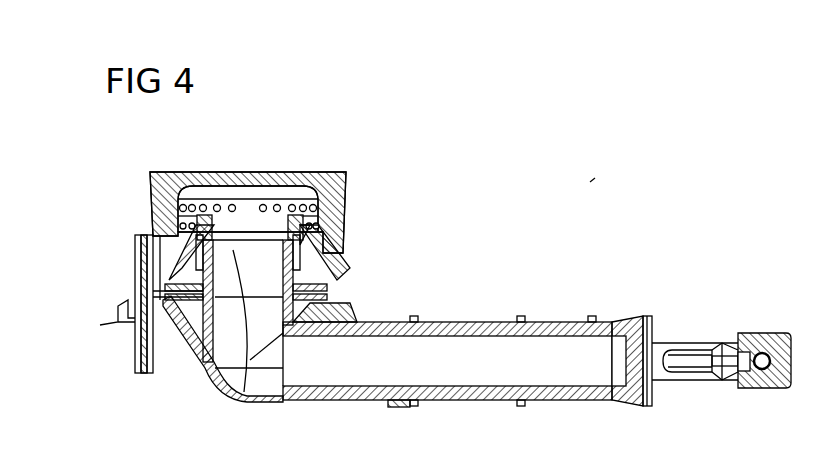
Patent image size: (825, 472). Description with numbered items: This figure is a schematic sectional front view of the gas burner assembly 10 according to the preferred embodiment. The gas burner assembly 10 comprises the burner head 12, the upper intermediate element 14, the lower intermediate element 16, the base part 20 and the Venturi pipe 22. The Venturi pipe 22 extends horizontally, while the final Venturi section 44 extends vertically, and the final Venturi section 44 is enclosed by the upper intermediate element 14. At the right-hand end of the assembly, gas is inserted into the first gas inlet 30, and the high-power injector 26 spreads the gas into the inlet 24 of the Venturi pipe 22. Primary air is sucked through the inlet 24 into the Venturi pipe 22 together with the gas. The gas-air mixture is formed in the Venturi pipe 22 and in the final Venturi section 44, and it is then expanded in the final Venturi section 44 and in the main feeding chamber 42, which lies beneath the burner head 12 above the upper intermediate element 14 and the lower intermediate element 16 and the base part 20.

The gas burner assembly 10 is at (593, 180).
The burner head 12 is at (300, 173).
The upper intermediate element 14 is at (355, 242).
The lower intermediate element 16 is at (355, 275).
The base part 20 is at (192, 362).
The Venturi pipe 22 is at (464, 322).
The inlet 24 is at (654, 392).
The high-power injector 26 is at (714, 343).
The first gas inlet 30 is at (763, 333).
The main feeding chamber 42 is at (256, 186).
The final Venturi section 44 is at (245, 385).